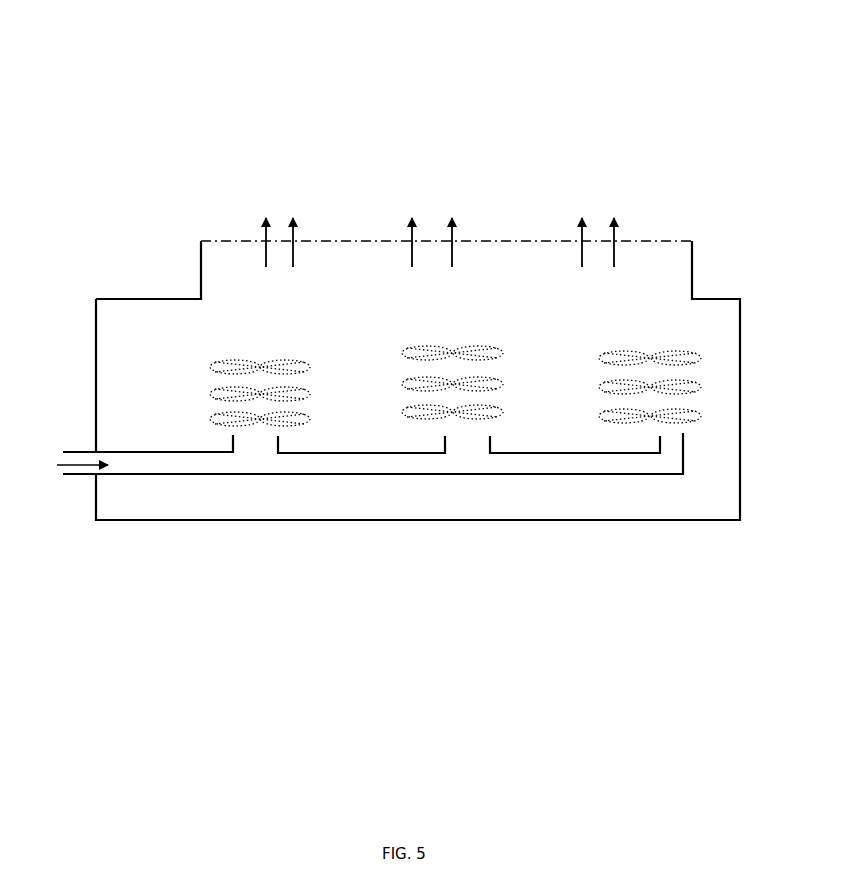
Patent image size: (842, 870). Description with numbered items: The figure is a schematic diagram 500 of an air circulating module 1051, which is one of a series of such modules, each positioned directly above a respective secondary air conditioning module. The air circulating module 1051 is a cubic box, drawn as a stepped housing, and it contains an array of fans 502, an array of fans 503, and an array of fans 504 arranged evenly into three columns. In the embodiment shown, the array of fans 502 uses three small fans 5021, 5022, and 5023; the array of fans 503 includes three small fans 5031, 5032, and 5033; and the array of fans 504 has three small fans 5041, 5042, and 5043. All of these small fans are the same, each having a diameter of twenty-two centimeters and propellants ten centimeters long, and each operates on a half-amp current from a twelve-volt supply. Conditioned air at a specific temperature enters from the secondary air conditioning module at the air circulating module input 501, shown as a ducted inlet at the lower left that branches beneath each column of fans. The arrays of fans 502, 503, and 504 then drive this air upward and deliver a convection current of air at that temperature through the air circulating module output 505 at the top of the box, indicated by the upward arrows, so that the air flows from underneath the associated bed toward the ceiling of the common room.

The schematic diagram 500 is at (420, 98).
The air circulating module input 501 is at (72, 452).
The array of fans 502 is at (262, 344).
The array of fans 503 is at (445, 335).
The array of fans 504 is at (648, 342).
The air circulating module output 505 is at (201, 262).
The small fan 5021 is at (212, 367).
The small fan 5022 is at (212, 394).
The small fan 5023 is at (212, 419).
The small fan 5031 is at (403, 353).
The small fan 5032 is at (403, 384).
The small fan 5033 is at (407, 412).
The small fan 5041 is at (600, 356).
The small fan 5042 is at (606, 387).
The small fan 5043 is at (608, 416).
The air circulating module 1051 is at (418, 380).